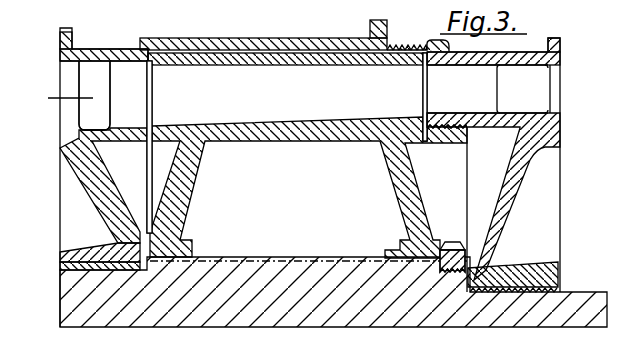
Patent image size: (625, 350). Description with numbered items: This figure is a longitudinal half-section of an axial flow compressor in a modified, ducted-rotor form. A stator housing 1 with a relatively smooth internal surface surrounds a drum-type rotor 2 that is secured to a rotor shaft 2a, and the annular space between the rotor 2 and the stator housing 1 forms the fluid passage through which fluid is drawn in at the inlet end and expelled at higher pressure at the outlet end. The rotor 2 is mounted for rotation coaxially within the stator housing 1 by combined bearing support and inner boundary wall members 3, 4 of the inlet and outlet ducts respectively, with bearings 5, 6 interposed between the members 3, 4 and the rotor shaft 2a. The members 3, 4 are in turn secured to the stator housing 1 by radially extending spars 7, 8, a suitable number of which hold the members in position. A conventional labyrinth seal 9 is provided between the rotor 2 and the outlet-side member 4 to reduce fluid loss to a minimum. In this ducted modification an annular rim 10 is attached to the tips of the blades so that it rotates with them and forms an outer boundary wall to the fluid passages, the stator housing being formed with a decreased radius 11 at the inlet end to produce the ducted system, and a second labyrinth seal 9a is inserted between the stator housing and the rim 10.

The stator housing 1 is at (272, 40).
The rotor 2 is at (188, 188).
The rotor shaft 2a is at (337, 327).
The combined bearing support and inner boundary wall member 3 is at (163, 80).
The combined bearing support and inner boundary wall member 4 is at (508, 198).
The bearing 5 is at (93, 260).
The bearing 6 is at (522, 270).
The spar 7 is at (107, 88).
The spar 8 is at (518, 93).
The labyrinth seal 9 is at (465, 131).
The second labyrinth seal 9a is at (415, 44).
The annular rim 10 is at (198, 43).
The decreased radius 11 is at (97, 49).